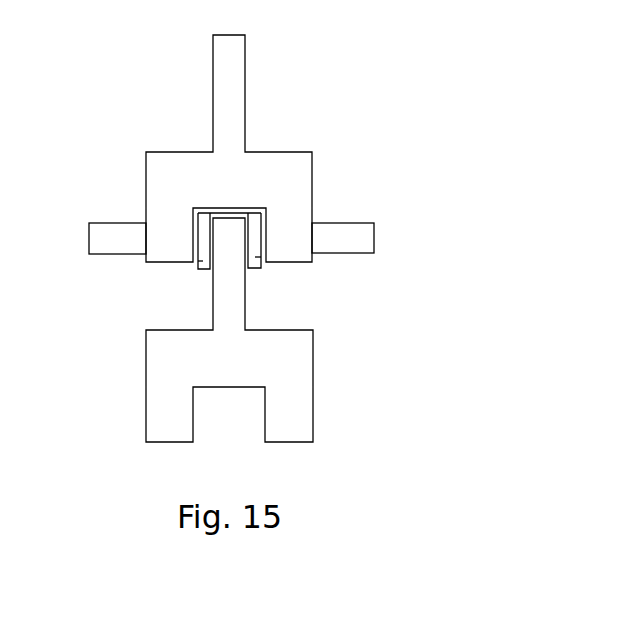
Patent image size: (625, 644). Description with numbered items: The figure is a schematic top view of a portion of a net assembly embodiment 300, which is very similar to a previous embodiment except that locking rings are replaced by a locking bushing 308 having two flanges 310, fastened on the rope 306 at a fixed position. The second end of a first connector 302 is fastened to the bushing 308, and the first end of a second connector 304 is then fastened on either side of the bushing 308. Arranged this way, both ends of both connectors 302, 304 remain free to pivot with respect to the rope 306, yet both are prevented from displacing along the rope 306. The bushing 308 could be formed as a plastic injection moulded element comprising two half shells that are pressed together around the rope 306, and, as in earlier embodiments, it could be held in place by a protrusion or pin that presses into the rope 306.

The embodiment 300 is at (353, 97).
The first connector 302 is at (307, 382).
The second connector 304 is at (227, 98).
The rope 306 is at (112, 242).
The locking bushing 308 is at (252, 238).
The flanges 310 is at (204, 267).